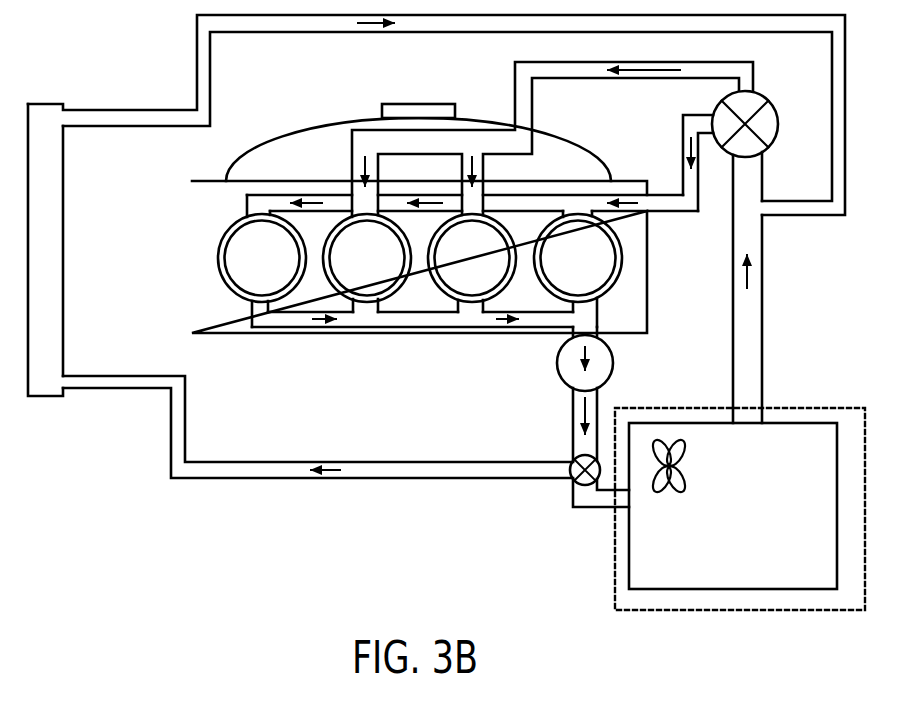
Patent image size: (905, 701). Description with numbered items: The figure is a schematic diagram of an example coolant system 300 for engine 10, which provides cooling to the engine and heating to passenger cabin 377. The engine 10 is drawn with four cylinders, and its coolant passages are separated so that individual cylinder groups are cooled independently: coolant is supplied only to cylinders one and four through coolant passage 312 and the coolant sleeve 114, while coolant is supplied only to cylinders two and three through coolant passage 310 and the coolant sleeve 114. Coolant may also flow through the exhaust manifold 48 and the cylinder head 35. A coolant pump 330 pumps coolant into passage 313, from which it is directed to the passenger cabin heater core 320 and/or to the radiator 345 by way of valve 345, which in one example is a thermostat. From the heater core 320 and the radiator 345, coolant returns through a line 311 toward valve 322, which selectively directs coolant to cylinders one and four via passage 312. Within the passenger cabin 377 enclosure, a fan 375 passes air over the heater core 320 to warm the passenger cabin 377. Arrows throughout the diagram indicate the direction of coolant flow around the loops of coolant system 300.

The engine 10 is at (168, 57).
The cylinder head 35 is at (178, 256).
The exhaust manifold 48 is at (266, 150).
The coolant sleeve 114 is at (229, 229).
The coolant system 300 is at (266, 564).
The coolant circuit or passage 310 is at (504, 82).
The coolant line 311 is at (720, 373).
The coolant circuit or passage 312 is at (670, 147).
The passage 313 is at (557, 407).
The passenger cabin heater core 320 is at (733, 506).
The valve 322 is at (766, 150).
The coolant pump 330 is at (612, 377).
The valve 345 is at (63, 298).
The fan 375 is at (680, 458).
The passenger cabin 377 is at (612, 562).